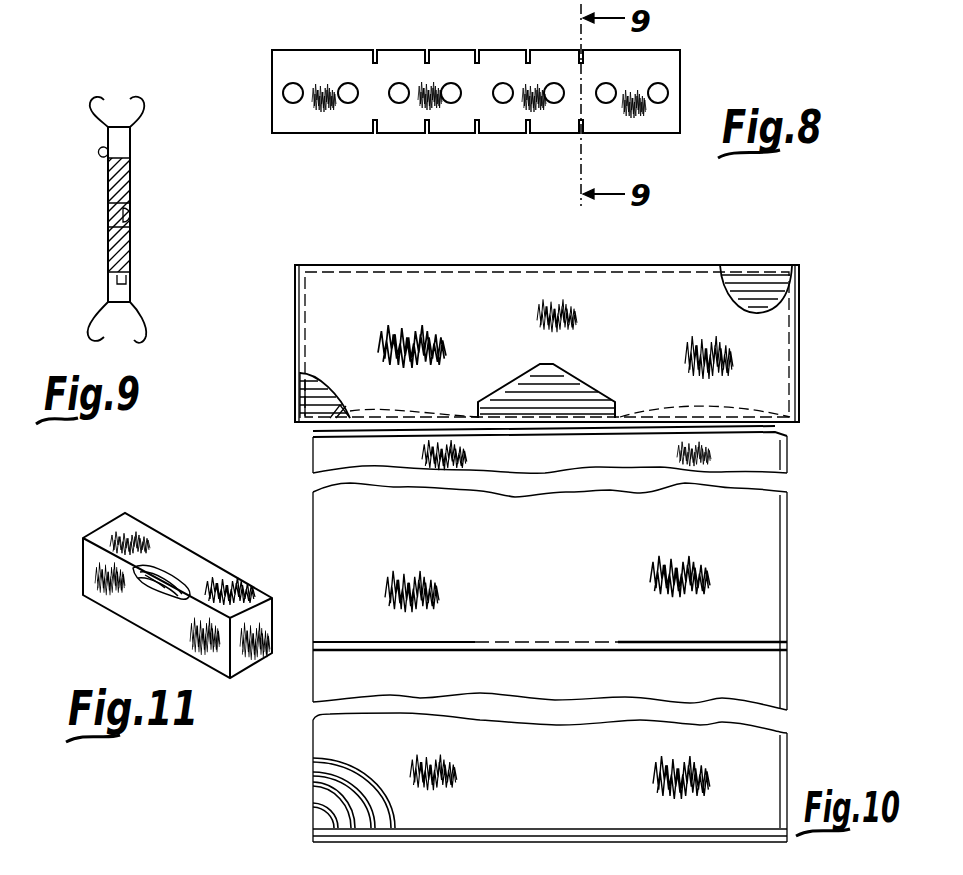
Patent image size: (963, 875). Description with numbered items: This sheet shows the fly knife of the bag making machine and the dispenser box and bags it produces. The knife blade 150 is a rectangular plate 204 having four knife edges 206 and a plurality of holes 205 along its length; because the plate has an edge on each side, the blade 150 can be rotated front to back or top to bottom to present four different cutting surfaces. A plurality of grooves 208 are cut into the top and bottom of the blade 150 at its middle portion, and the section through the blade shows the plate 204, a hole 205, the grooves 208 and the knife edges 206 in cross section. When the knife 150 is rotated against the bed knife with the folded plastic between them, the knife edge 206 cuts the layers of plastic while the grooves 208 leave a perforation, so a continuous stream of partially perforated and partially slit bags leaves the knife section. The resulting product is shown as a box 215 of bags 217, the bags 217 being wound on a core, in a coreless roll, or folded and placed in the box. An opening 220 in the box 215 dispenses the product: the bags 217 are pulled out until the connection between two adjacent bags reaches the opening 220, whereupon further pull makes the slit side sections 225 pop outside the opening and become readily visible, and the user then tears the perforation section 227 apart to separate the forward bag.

In FIG. 8, the knife blade 150 is at (483, 102).
In FIG. 9, the knife blade 150 is at (120, 221).
In FIG. 8, the rectangular plate 204 is at (682, 72).
In FIG. 9, the rectangular plate 204 is at (108, 253).
In FIG. 8, the holes 205 is at (292, 95).
In FIG. 9, the holes 205 is at (131, 213).
In FIG. 8, the knife edges 206 is at (290, 50).
In FIG. 9, the knife edges 206 is at (75, 208).
In FIG. 8, the grooves 208 is at (528, 50).
In FIG. 9, the grooves 208 is at (108, 151).
In FIG. 10, the box 215 is at (801, 349).
In FIG. 11, the box 215 is at (215, 582).
In FIG. 10, the bags 217 is at (760, 290).
In FIG. 11, the bags 217 is at (162, 602).
In FIG. 10, the opening 220 is at (580, 382).
In FIG. 11, the opening 220 is at (150, 570).
In FIG. 10, the slit side sections 225 is at (312, 432).
In FIG. 10, the perforation section 227 is at (550, 424).